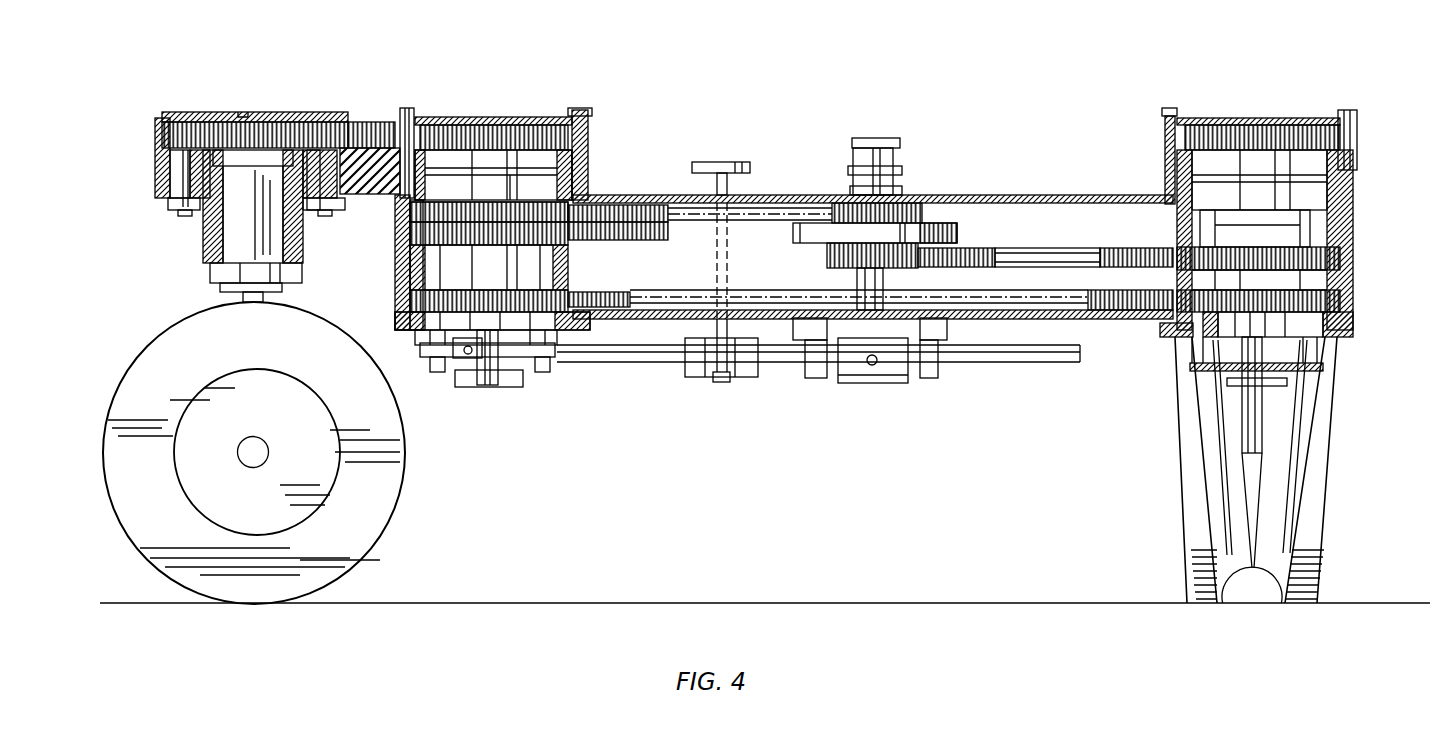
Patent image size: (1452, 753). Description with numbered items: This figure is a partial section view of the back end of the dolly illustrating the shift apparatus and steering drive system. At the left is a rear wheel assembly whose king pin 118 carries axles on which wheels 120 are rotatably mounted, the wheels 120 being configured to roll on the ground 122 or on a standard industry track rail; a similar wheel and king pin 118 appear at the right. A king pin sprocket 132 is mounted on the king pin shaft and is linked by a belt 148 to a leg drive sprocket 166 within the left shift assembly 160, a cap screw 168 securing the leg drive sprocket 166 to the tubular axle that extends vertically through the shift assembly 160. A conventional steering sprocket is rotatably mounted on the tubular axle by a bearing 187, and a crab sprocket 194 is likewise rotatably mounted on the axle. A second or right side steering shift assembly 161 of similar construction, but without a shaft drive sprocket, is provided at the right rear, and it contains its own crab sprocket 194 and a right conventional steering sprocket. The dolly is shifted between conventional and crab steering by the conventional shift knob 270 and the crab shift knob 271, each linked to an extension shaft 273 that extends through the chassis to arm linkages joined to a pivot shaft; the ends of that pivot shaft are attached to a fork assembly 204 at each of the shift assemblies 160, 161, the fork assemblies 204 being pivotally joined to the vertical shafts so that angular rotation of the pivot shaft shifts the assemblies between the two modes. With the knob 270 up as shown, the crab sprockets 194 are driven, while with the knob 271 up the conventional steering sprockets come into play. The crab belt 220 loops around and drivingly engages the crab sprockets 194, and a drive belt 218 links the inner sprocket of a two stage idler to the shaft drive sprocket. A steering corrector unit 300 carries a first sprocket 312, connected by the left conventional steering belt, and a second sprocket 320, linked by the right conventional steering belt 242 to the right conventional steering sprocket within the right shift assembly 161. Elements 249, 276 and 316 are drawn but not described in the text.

The king pin 118 is at (235, 300).
The wheels 120 is at (158, 352).
The ground 122 is at (1105, 603).
The king pin sprocket 132 is at (215, 118).
The belt 148 is at (375, 118).
The left shift assembly 160 is at (555, 94).
The right side steering shift assembly 161 is at (1162, 104).
The leg drive sprocket 166 is at (1308, 116).
The cap screw 168 is at (462, 115).
The bearing 187 is at (1340, 238).
The crab sprocket 194 is at (408, 302).
The fork assembly 204 is at (463, 398).
The drive belt 218 is at (625, 243).
The crab belt 220 is at (778, 302).
The right conventional steering belt 242 is at (1045, 262).
The bottom plate 249 is at (1103, 320).
The conventional shift knob 270 is at (886, 137).
The crab shift knob 271 is at (745, 140).
The extension shaft 273 is at (672, 358).
The guide rod 276 is at (600, 363).
The steering corrector unit 300 is at (968, 212).
The first sprocket 312 is at (842, 200).
The gear hub 316 is at (958, 233).
The second sprocket 320 is at (825, 258).